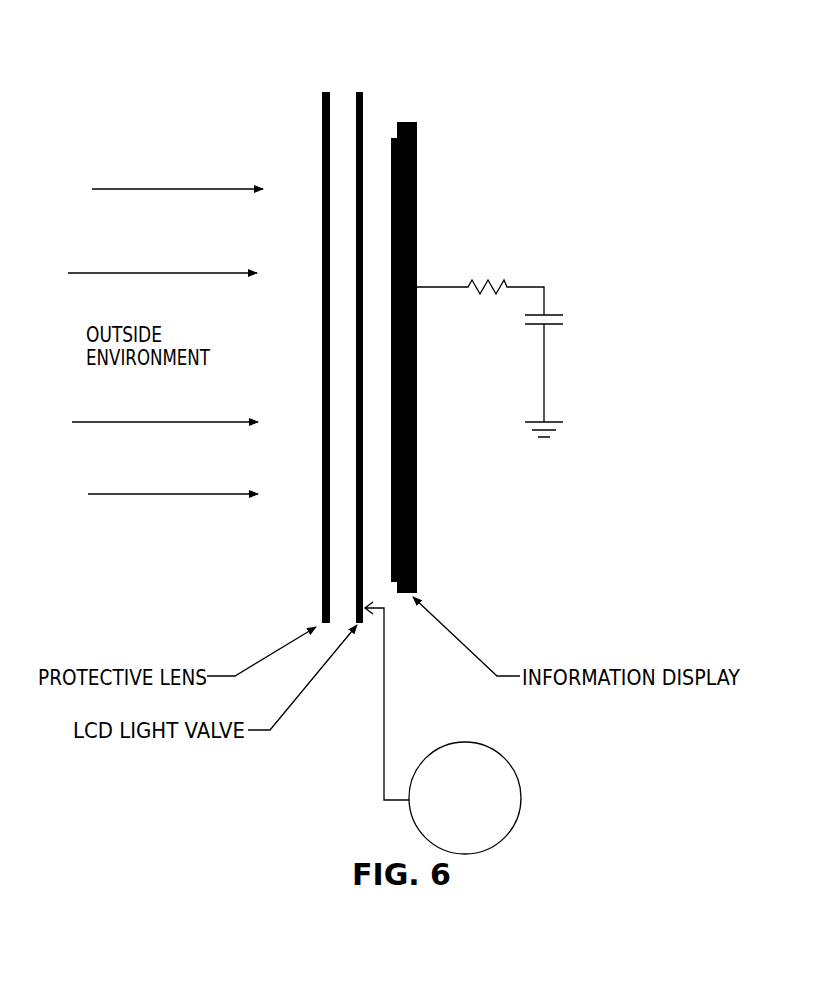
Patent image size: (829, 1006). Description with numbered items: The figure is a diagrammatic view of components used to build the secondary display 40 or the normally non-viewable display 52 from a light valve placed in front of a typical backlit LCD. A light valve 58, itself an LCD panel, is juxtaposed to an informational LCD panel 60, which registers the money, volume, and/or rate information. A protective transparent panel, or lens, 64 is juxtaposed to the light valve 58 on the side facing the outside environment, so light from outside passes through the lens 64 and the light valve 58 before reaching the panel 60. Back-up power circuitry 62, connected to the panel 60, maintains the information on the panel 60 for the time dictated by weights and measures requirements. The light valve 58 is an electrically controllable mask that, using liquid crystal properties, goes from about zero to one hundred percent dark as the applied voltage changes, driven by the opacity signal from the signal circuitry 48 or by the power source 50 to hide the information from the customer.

The secondary display 40 is at (379, 317).
The normally non-viewable display 52 is at (379, 317).
The light valve 58 is at (357, 96).
The protective transparent panel 64 is at (322, 538).
The informational LCD panel 60 is at (415, 525).
The back-up power circuitry 62 is at (520, 266).
The signal circuitry 48 is at (502, 728).
The power source 50 is at (521, 806).